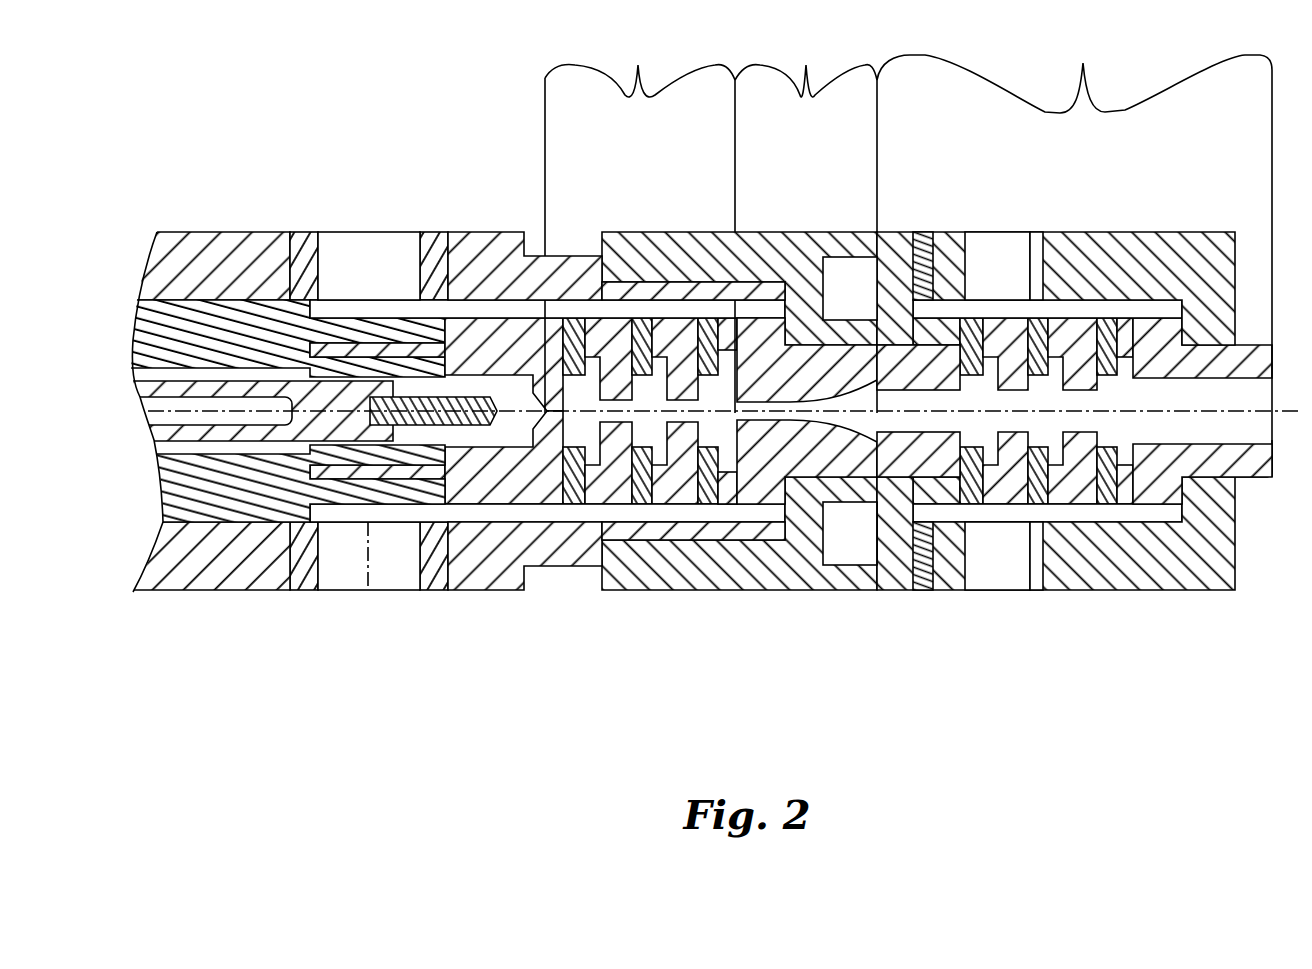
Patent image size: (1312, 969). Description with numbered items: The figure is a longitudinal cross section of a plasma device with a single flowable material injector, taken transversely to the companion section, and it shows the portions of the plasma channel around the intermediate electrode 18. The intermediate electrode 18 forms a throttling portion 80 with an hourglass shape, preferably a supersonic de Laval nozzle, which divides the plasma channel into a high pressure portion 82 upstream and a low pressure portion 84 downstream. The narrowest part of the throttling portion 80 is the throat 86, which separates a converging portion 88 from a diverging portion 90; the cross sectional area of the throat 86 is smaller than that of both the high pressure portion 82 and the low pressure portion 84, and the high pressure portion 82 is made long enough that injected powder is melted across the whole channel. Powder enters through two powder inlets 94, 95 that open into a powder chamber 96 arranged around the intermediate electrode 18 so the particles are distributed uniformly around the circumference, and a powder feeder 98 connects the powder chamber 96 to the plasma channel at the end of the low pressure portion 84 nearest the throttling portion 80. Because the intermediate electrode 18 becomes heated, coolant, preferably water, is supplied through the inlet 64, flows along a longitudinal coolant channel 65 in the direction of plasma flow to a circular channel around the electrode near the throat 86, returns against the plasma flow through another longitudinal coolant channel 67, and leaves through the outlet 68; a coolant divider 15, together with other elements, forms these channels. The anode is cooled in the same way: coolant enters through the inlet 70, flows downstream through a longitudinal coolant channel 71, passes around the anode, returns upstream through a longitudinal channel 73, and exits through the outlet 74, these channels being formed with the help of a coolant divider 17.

The coolant divider 15 is at (168, 483).
The coolant divider 17 is at (918, 565).
The intermediate electrode 18 is at (748, 338).
The inlet 64 is at (350, 565).
The longitudinal coolant channel 65 is at (487, 512).
The longitudinal coolant channel 67 is at (470, 312).
The outlet 68 is at (347, 255).
The inlet 70 is at (1015, 565).
The longitudinal coolant channel 71 is at (1150, 512).
The longitudinal channel 73 is at (1140, 305).
The outlet 74 is at (1022, 240).
The throttling portion 80 is at (739, 302).
The high pressure portion 82 is at (640, 56).
The low pressure portion 84 is at (1074, 67).
The throat 86 is at (783, 414).
The converging portion 88 is at (735, 415).
The diverging portion 90 is at (888, 420).
The powder inlet 94 is at (833, 257).
The powder inlet 95 is at (830, 575).
The powder chamber 96 is at (870, 520).
The powder feeder 98 is at (905, 470).